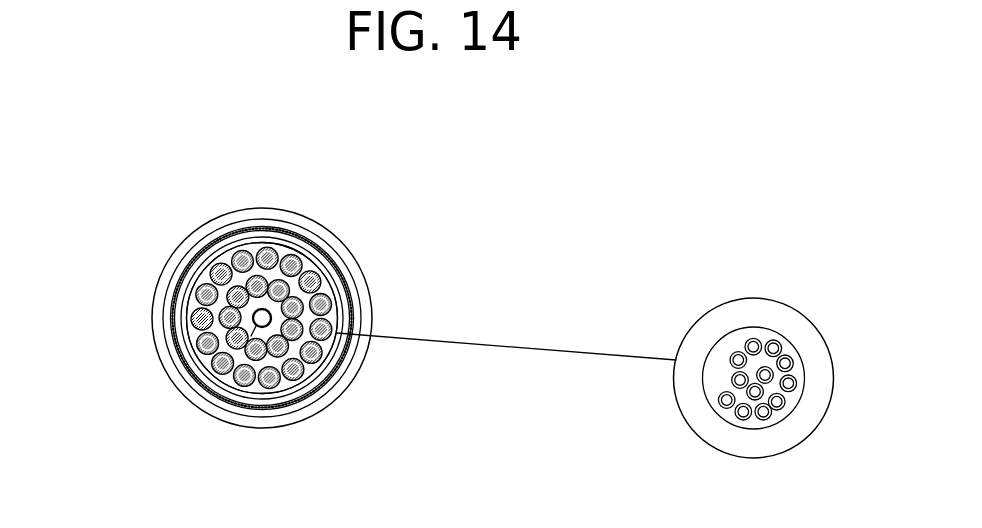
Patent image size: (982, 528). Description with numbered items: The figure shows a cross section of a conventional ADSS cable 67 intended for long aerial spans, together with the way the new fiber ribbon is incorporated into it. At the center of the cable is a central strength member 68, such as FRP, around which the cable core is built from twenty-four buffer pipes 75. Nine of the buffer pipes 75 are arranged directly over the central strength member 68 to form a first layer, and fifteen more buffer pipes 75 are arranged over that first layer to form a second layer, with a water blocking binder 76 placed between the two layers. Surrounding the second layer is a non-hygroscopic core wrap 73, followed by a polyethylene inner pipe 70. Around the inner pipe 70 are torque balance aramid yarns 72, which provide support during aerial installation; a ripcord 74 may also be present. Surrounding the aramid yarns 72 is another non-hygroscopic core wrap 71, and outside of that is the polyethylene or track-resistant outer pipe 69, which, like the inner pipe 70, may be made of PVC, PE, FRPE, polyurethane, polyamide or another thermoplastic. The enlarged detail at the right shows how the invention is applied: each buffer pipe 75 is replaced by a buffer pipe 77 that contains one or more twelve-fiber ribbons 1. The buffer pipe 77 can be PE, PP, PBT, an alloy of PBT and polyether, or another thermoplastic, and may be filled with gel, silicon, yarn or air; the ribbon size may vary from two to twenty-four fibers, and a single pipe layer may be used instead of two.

The fiber ribbon 1 is at (757, 420).
The ADSS cable 67 is at (120, 288).
The central strength member 68 is at (260, 322).
The outer pipe 69 is at (238, 220).
The inner pipe 70 is at (248, 237).
The core wrap 71 is at (268, 232).
The torque balance aramid yarns 72 is at (308, 231).
The core wrap 73 is at (343, 315).
The ripcord 74 is at (333, 348).
The buffer pipe 75 is at (322, 370).
The water blocking binder 76 is at (287, 372).
The buffer pipe 77 is at (757, 298).